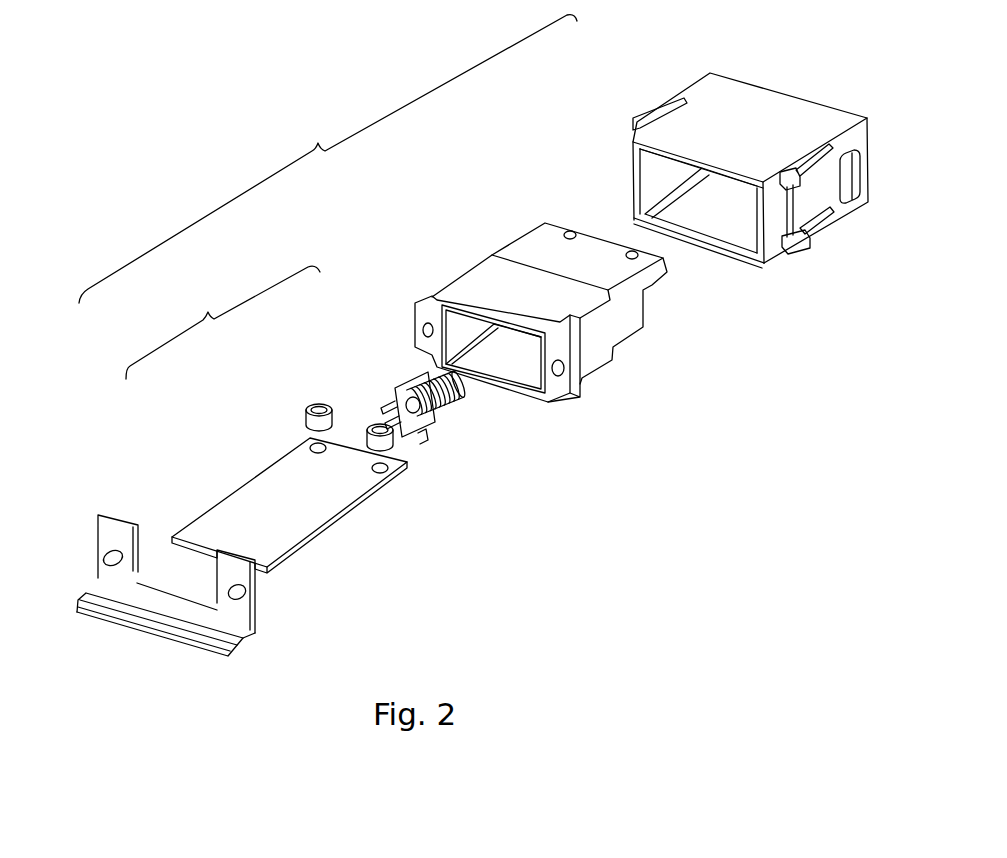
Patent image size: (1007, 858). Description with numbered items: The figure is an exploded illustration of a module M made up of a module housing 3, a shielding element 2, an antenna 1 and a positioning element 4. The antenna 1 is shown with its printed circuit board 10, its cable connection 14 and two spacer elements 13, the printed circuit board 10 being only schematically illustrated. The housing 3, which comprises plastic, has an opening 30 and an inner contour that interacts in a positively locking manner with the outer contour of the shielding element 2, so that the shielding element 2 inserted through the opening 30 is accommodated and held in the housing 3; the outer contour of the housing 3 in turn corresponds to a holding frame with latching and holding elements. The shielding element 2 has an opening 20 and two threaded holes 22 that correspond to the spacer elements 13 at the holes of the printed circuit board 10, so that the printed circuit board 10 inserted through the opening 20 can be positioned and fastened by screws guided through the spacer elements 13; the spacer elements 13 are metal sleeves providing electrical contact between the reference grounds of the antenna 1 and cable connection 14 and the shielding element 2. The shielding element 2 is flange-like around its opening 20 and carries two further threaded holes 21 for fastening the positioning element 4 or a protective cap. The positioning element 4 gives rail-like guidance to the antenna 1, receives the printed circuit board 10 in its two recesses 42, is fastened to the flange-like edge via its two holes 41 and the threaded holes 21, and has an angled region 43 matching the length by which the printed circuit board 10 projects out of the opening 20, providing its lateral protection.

The module M is at (328, 159).
The antenna 1 is at (223, 322).
The shielding element 2 is at (541, 310).
The module housing 3 is at (749, 179).
The positioning element 4 is at (206, 581).
The printed circuit board 10 is at (252, 505).
The spacer elements 13 is at (305, 422).
The cable connection 14 is at (390, 395).
The opening 20 is at (502, 368).
The threaded holes 21 is at (557, 377).
The threaded holes 22 is at (572, 228).
The opening 30 is at (731, 225).
The holes 41 is at (250, 613).
The recesses 42 is at (87, 603).
The angled region 43 is at (250, 637).